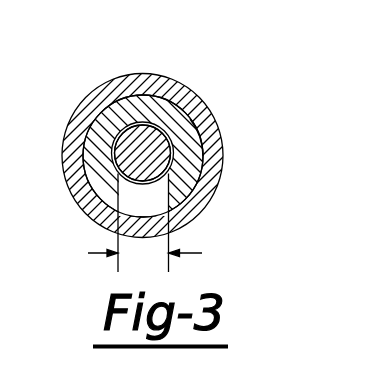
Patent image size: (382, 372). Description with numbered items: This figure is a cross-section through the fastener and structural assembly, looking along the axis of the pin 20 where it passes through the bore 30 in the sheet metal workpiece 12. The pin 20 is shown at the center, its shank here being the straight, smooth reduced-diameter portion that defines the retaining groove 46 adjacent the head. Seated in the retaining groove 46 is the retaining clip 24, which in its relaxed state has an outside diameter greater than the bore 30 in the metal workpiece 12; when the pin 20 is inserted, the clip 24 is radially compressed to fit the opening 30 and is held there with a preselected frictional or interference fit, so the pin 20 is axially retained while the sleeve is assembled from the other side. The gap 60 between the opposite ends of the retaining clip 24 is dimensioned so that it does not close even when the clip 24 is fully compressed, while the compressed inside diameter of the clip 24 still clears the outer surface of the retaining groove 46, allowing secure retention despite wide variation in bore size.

The workpiece 12 is at (63, 143).
The pin 20 is at (160, 135).
The retaining clip 24 is at (132, 93).
The bore 30 is at (190, 150).
The retaining groove 46 is at (142, 122).
The gap 60 is at (145, 244).